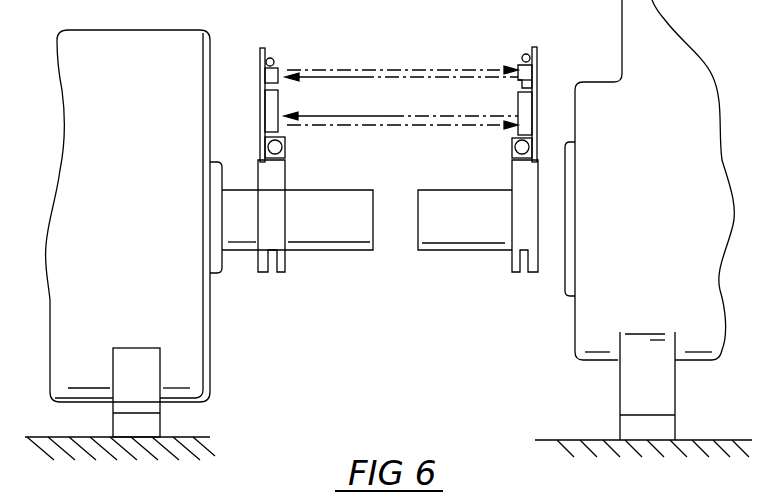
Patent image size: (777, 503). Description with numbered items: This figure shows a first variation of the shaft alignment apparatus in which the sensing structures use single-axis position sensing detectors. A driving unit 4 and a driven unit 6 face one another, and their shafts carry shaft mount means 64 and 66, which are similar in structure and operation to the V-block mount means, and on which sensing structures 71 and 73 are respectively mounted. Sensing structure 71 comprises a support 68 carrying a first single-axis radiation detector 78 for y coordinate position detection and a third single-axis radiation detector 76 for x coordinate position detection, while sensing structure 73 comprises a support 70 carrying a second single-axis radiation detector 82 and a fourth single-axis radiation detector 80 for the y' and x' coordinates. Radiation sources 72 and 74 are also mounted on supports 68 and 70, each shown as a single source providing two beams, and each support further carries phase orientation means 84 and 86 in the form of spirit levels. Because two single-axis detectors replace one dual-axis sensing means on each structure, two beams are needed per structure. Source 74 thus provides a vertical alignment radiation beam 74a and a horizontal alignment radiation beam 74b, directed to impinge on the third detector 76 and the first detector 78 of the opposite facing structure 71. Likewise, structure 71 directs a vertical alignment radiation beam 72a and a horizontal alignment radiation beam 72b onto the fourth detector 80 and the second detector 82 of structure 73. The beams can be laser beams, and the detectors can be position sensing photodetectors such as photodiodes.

The driving unit 4 is at (138, 30).
The driven unit 6 is at (688, 48).
The shaft mount means 64 is at (288, 268).
The shaft mount means 66 is at (510, 262).
The support 68 is at (260, 105).
The support 70 is at (538, 99).
The sensing structure 71 is at (294, 52).
The radiation source 72 is at (283, 146).
The vertical alignment radiation beam 72a is at (380, 132).
The horizontal alignment radiation beam 72b is at (373, 68).
The sensing structure 73 is at (502, 56).
The radiation source 74 is at (512, 150).
The vertical alignment radiation beam 74a is at (432, 116).
The horizontal alignment radiation beam 74b is at (378, 80).
The third single-axis radiation detector 76 is at (270, 124).
The first single-axis radiation detector 78 is at (265, 76).
The fourth single-axis radiation detector 80 is at (533, 113).
The second single-axis radiation detector 82 is at (541, 70).
The phase orientation means 84 is at (273, 57).
The phase orientation means 86 is at (524, 55).